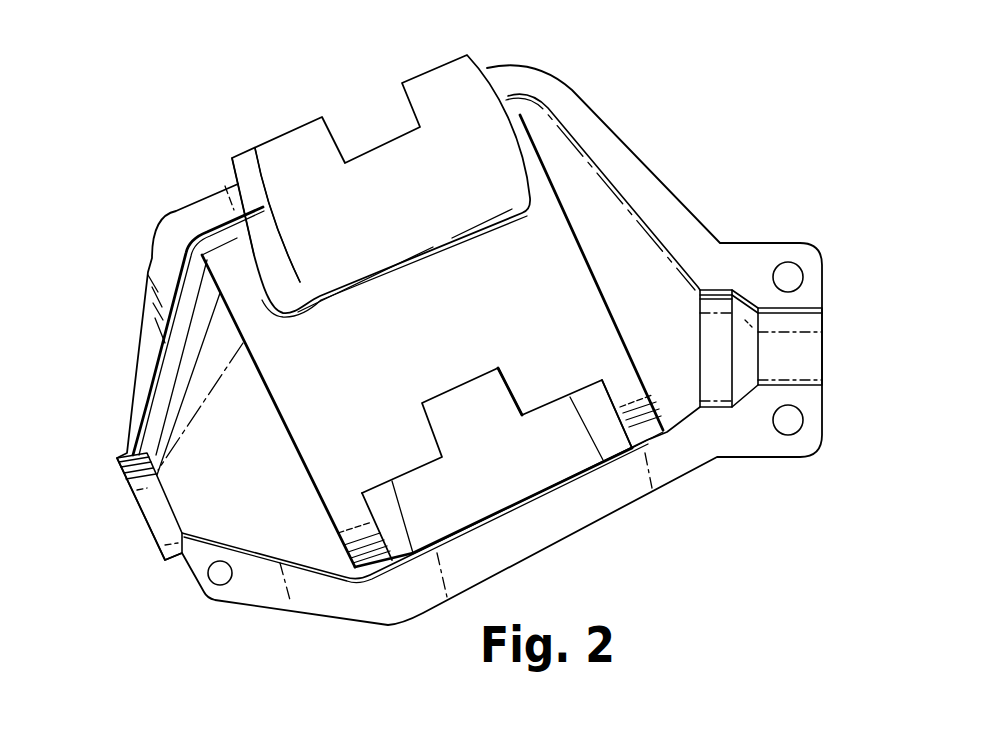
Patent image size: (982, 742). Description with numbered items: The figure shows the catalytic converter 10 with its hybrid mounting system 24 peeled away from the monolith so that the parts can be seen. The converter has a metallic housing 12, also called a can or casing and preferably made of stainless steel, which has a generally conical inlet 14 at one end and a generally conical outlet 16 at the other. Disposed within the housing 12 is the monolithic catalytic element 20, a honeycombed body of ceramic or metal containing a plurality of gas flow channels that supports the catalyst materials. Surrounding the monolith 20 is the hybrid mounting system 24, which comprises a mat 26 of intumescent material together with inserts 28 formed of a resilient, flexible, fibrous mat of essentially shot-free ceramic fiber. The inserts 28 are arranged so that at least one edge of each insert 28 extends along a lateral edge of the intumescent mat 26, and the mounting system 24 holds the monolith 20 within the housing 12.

The catalytic converter 10 is at (632, 120).
The metallic housing 12 is at (145, 337).
The inlet 14 is at (155, 517).
The outlet 16 is at (777, 323).
The monolithic catalytic element 20 is at (600, 317).
The hybrid mounting system 24 is at (478, 62).
The mat 26 is at (312, 145).
The inserts 28 is at (253, 165).